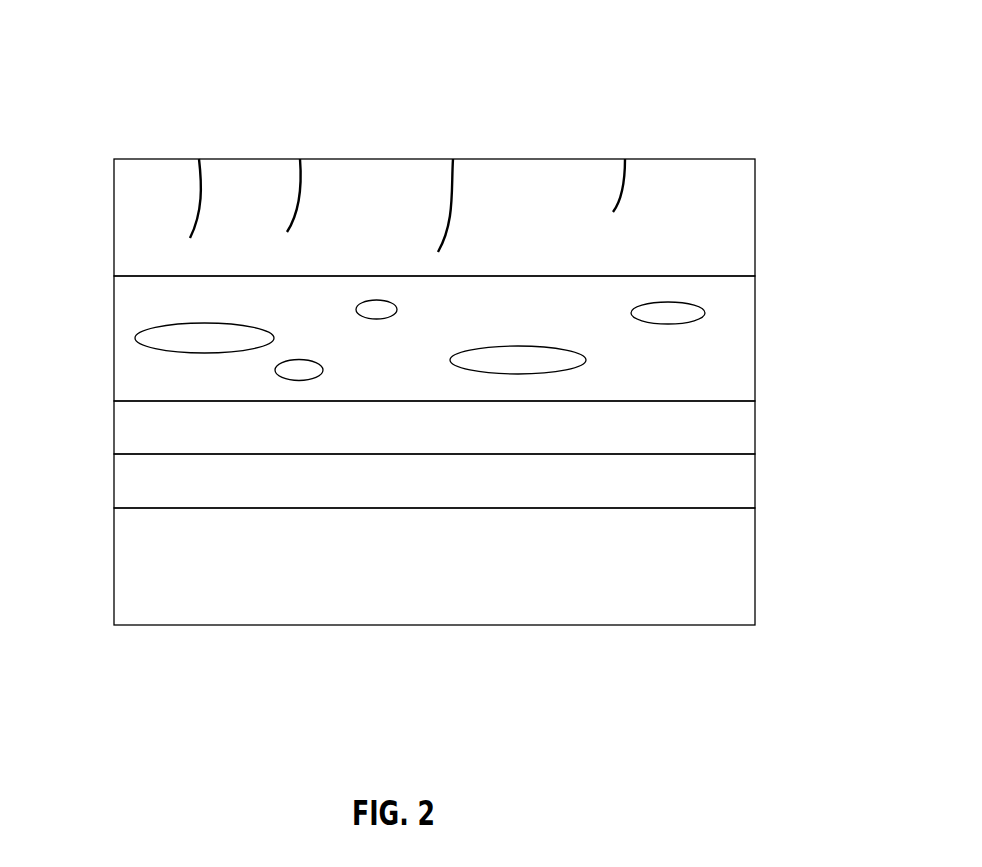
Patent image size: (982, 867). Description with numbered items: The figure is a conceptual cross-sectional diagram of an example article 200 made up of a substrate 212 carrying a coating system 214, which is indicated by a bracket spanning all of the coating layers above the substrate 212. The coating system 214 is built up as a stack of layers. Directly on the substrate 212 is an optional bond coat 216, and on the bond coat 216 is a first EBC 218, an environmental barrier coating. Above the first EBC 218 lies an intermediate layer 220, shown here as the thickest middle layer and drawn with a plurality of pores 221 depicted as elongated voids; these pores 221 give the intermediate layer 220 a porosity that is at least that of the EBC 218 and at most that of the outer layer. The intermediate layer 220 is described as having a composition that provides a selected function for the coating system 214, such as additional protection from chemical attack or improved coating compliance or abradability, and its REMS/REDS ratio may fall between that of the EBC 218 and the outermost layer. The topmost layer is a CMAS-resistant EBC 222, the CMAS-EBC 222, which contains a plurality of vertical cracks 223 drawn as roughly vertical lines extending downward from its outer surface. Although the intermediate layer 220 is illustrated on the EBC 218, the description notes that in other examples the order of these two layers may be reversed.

The article 200 is at (718, 70).
The substrate 212 is at (114, 577).
The coating system 214 is at (755, 157).
The bond coat 216 is at (114, 482).
The first EBC 218 is at (114, 428).
The intermediate layer 220 is at (114, 335).
The pores 221 is at (515, 348).
The CMAS-EBC 222 is at (114, 240).
The vertical cracks 223 is at (453, 159).